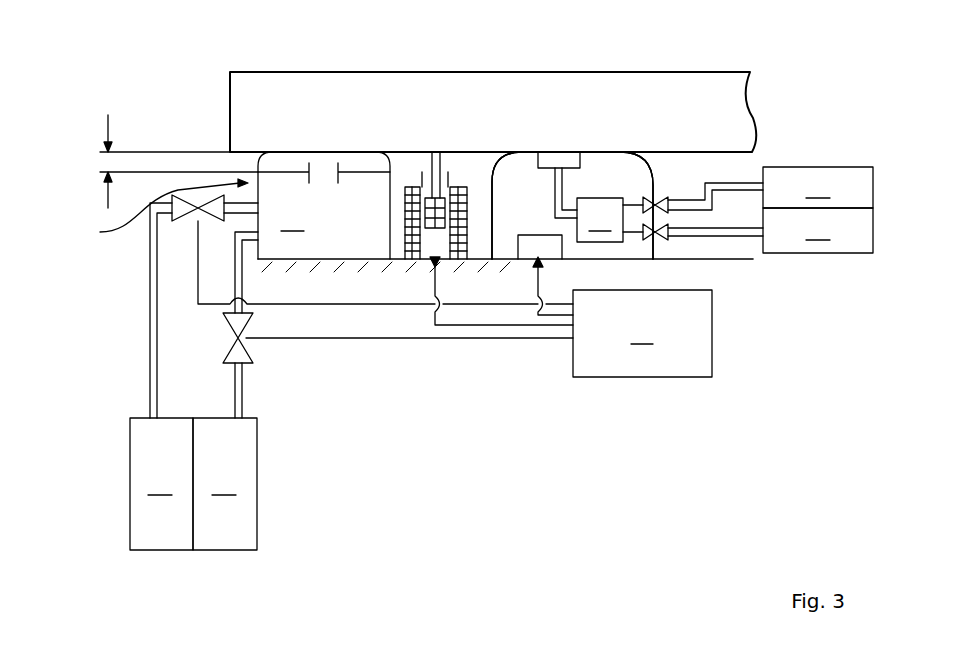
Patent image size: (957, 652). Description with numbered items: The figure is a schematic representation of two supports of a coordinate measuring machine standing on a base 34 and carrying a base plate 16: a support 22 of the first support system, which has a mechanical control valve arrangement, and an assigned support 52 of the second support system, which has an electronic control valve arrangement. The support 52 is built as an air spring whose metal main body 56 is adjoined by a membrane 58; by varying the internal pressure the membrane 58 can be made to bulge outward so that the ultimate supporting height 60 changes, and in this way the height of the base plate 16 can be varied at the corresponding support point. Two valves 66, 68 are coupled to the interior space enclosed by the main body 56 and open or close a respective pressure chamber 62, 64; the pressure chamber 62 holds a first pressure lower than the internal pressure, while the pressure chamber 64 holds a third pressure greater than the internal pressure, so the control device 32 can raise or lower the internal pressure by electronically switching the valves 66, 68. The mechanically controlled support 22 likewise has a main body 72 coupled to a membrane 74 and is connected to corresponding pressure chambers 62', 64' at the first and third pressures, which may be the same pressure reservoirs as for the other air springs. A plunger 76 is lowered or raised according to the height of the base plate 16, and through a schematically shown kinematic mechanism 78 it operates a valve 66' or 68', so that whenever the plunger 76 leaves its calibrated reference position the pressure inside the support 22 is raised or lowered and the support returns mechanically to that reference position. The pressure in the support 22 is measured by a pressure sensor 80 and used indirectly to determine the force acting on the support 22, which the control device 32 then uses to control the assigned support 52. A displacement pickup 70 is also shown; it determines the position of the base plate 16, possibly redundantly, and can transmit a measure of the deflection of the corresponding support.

The base plate 16 is at (485, 72).
The support 22 is at (672, 166).
The control device 32 is at (455, 299).
The base 34 is at (367, 292).
The support of the second support system 52 is at (160, 212).
The main body 56 is at (387, 202).
The membrane 58 is at (378, 158).
The supporting height 60 is at (105, 160).
The pressure chamber 62 is at (161, 414).
The pressure chamber 64 is at (225, 522).
The valve 66 is at (213, 242).
The valve 68 is at (277, 325).
The displacement pickup 70 is at (406, 186).
The main body 72 is at (497, 215).
The membrane 74 is at (650, 157).
The plunger 76 is at (545, 174).
The pressure regulator 78 is at (600, 220).
The pressure sensor 80 is at (552, 262).
The pressure chamber 62' is at (818, 155).
The pressure chamber 64' is at (818, 262).
The valve 66' is at (693, 184).
The valve 68' is at (693, 257).